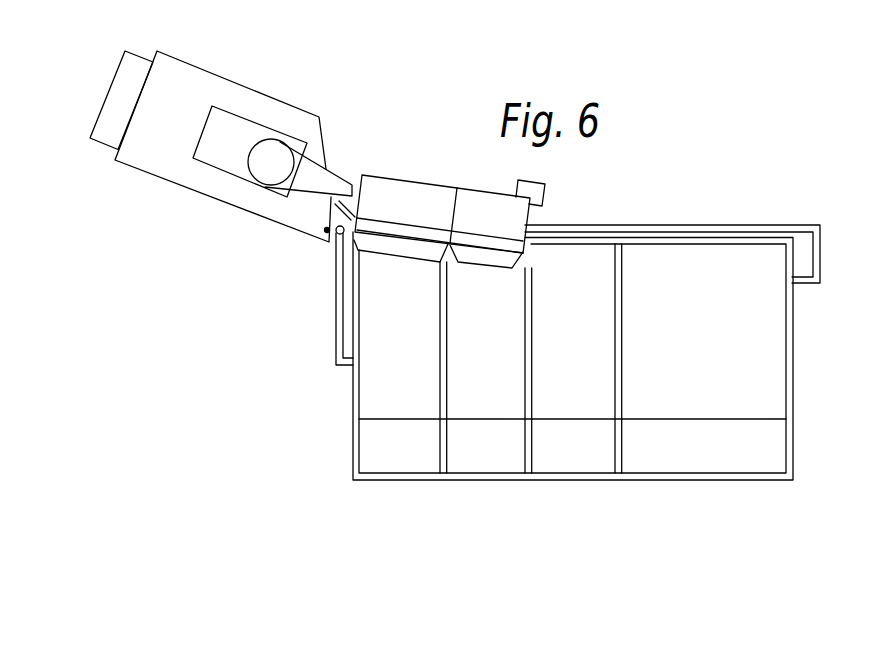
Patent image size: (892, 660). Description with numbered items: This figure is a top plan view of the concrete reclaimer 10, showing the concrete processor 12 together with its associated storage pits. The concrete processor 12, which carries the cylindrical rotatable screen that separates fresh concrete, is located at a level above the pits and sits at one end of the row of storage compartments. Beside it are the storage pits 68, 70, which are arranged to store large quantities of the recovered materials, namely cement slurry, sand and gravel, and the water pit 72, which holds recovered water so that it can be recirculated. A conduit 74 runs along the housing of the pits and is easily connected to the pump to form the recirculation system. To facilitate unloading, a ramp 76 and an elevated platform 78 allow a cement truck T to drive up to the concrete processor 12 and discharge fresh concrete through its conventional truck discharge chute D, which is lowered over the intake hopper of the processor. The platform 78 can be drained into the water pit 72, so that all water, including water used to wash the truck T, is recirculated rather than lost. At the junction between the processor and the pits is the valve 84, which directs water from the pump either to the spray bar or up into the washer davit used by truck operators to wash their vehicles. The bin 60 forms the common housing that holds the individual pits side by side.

The concrete reclaimer 10 is at (177, 406).
The concrete processor 12 is at (393, 202).
The housing / bin 60 is at (493, 403).
The storage pit 68 is at (397, 408).
The storage pit 70 is at (563, 402).
The water pit 72 is at (718, 398).
The conduit 74 is at (705, 225).
The ramp 76 is at (102, 132).
The platform 78 is at (152, 163).
The valve 84 is at (328, 231).
The cement truck T is at (237, 132).
The discharge chute D is at (332, 173).